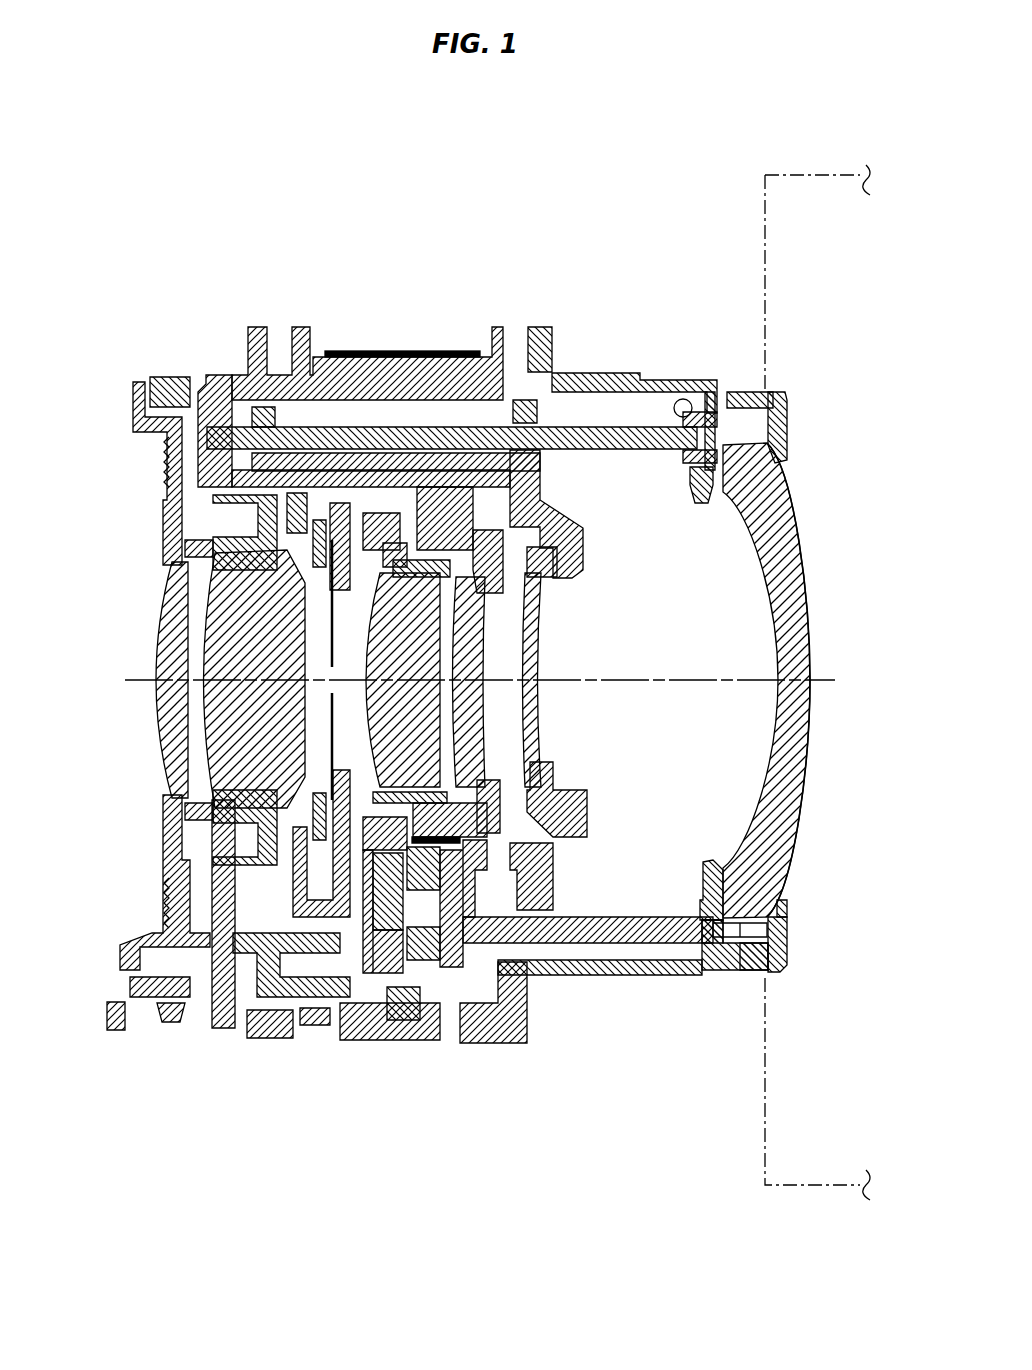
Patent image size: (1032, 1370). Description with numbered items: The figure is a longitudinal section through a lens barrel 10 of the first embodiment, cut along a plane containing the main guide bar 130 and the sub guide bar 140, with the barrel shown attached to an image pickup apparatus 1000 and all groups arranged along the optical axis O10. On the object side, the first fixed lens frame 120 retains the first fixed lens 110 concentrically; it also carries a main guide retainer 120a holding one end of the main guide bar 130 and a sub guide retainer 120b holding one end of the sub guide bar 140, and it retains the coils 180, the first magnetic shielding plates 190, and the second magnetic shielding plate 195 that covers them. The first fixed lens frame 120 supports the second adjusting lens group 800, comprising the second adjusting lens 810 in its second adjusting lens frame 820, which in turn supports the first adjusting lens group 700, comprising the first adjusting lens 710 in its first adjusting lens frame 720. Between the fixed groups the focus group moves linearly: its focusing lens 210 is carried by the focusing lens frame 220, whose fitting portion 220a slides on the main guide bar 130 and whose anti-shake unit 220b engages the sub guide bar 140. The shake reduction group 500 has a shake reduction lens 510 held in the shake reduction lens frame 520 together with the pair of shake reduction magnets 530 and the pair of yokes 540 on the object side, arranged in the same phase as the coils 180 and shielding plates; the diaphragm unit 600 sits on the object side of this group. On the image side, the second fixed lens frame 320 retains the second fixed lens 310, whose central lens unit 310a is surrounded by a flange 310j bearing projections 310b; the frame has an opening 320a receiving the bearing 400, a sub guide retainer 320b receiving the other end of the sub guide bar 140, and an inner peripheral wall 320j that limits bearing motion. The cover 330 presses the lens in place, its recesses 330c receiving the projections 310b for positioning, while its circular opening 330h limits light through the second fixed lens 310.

The lens barrel 10 is at (346, 224).
The image pickup apparatus 1000 is at (806, 173).
The optical axis O10 is at (748, 683).
The first fixed lens 110 is at (405, 372).
The first fixed lens frame 120 is at (318, 364).
The main guide retainer 120a is at (214, 377).
The sub guide retainer 120b is at (490, 1003).
The main guide bar 130 is at (541, 522).
The sub guide bar 140 is at (615, 977).
The coil 180 is at (440, 1003).
The first magnetic shielding plate 190 is at (463, 1003).
The second magnetic shielding plate 195 is at (517, 977).
The focusing lens 210 is at (556, 440).
The focusing lens frame 220 is at (482, 452).
The fitting portion 220a is at (268, 408).
The anti-shake unit 220b is at (547, 932).
The second fixed lens 310 is at (790, 662).
The lens unit 310a is at (790, 582).
The projection 310b is at (767, 900).
The flange 310j is at (758, 977).
The second fixed lens frame 320 is at (653, 387).
The opening 320a is at (687, 396).
The sub guide retainer 320b is at (705, 977).
The inner peripheral wall 320j is at (726, 977).
The cover 330 is at (777, 393).
The recess 330c is at (787, 950).
The opening 330h is at (780, 900).
The bearing 400 is at (712, 402).
The shake reduction group 500 is at (355, 830).
The shake reduction lens 510 is at (300, 905).
The shake reduction lens frame 520 is at (423, 940).
The shake reduction magnet 530 is at (393, 977).
The yoke 540 is at (340, 977).
The diaphragm unit 600 is at (212, 1005).
The first adjusting lens group 700 is at (128, 703).
The first adjusting lens 710 is at (173, 730).
The first adjusting lens frame 720 is at (170, 870).
The second adjusting lens group 800 is at (188, 643).
The second adjusting lens 810 is at (243, 633).
The second adjusting lens frame 820 is at (185, 505).